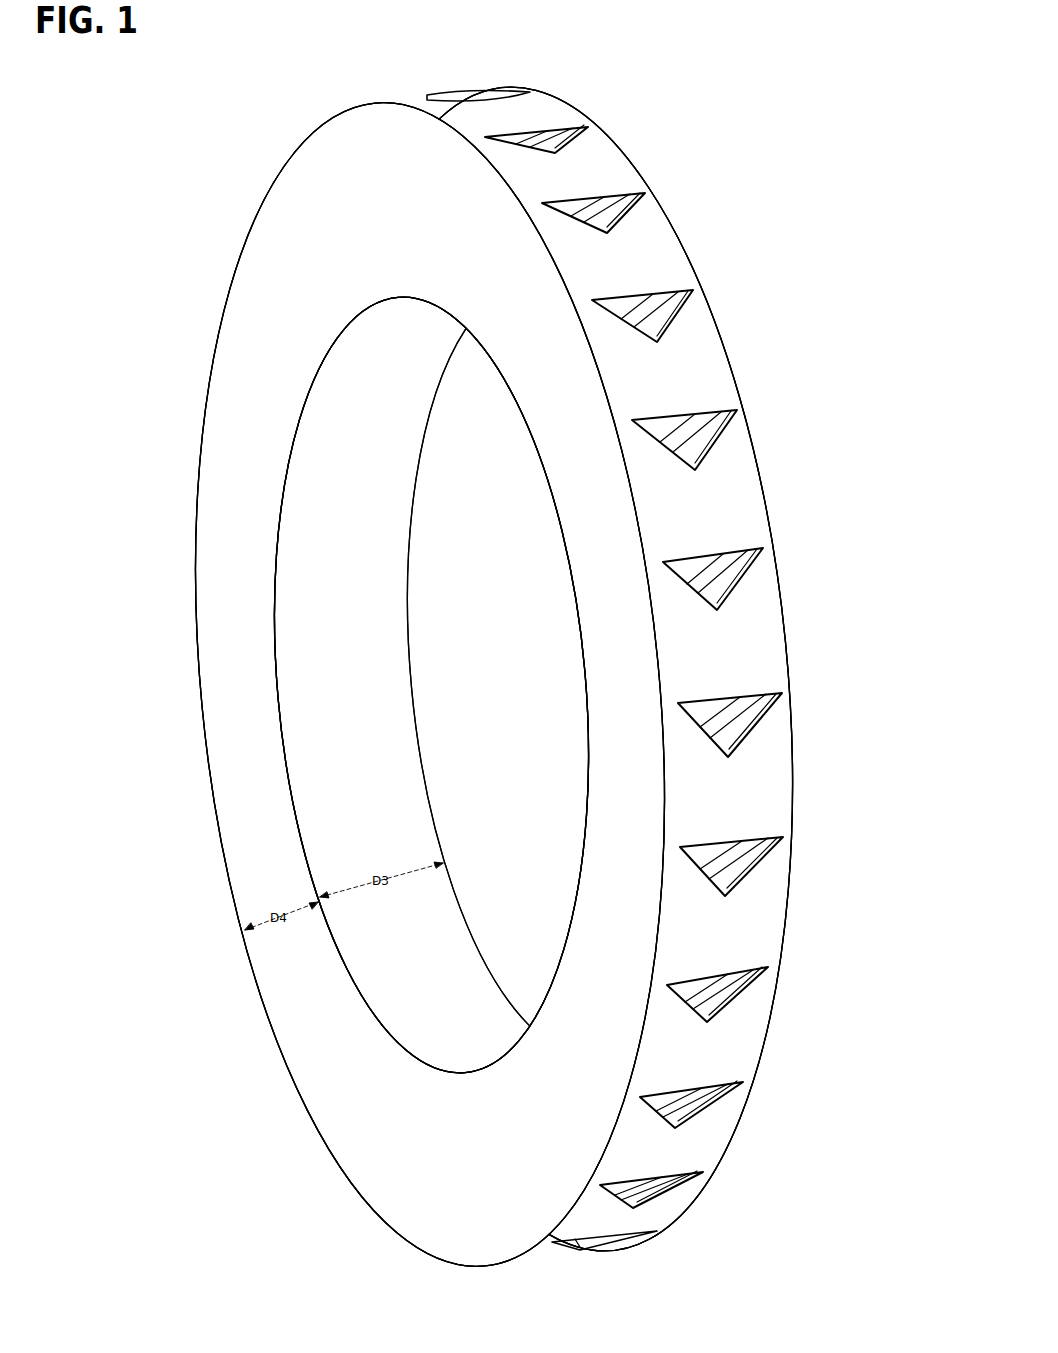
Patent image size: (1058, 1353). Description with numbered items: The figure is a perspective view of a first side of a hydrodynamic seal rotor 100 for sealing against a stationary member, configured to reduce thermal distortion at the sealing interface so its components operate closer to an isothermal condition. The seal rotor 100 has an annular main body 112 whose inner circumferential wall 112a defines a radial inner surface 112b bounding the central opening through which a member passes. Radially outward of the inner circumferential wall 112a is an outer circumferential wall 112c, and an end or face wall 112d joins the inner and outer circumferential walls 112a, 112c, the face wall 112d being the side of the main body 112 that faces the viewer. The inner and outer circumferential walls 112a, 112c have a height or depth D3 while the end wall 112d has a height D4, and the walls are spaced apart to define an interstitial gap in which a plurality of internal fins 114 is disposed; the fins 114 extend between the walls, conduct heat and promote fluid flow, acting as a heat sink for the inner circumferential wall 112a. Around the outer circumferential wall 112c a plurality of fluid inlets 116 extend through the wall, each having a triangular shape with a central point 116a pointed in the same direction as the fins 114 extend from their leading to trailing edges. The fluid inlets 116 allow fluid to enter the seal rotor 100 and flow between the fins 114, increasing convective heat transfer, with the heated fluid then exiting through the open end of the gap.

The seal rotor 100 is at (225, 239).
The main body 112 is at (522, 113).
The inner circumferential wall 112a is at (347, 715).
The radial inner surface 112b is at (317, 592).
The outer circumferential wall 112c is at (663, 262).
The end wall 112d is at (255, 543).
The internal fins 114 is at (733, 867).
The fluid inlets 116 is at (757, 568).
The central point 116a is at (730, 755).